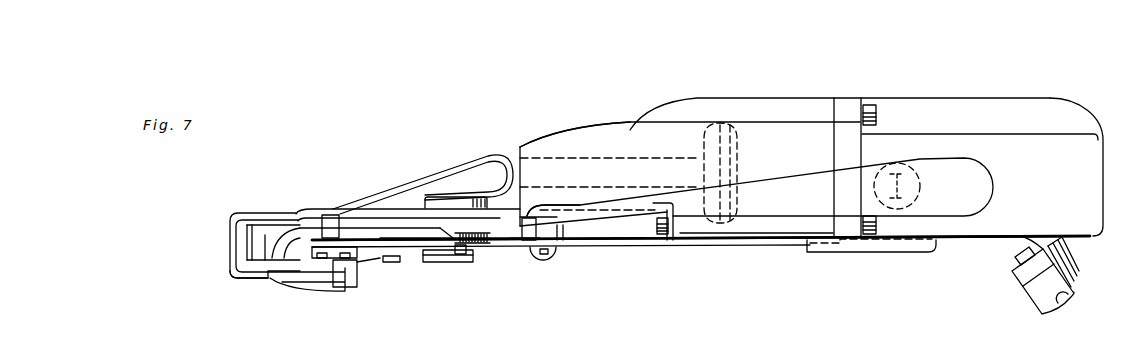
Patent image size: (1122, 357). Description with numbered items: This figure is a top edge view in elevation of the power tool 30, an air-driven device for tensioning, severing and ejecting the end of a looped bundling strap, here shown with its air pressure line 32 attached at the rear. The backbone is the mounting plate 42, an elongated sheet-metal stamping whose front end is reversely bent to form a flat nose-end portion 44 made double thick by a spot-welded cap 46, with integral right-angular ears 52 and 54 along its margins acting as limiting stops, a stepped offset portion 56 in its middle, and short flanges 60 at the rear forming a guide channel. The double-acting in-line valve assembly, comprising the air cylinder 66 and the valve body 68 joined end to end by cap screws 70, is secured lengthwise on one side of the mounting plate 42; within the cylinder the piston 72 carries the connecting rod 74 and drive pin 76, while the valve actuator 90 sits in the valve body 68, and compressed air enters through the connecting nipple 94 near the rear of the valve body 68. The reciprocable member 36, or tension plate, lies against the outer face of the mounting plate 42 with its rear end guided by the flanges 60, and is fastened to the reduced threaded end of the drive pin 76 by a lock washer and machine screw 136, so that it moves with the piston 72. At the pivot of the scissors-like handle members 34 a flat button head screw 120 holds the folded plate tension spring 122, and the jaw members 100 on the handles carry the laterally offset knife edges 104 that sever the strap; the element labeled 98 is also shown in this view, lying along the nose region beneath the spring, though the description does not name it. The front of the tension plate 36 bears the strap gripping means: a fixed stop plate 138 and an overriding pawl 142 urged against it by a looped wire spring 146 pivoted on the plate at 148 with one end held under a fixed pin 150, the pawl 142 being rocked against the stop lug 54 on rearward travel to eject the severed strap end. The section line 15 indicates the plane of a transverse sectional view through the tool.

The section line 15- 15 is at (348, 332).
The power tool 30 is at (662, 82).
The air pressure line 32 is at (1047, 294).
The handle members 34 is at (984, 189).
The reciprocable member 36 is at (747, 247).
The mounting plate 42 is at (283, 224).
The nose-end portion 44 is at (242, 247).
The cap 46 is at (233, 272).
The ear 52 is at (324, 220).
The ear 54 is at (459, 262).
The offset portion 56 is at (532, 204).
The flange 60 is at (890, 252).
The air cylinder 66 is at (703, 100).
The valve body 68 is at (1045, 100).
The cap screws 70 is at (878, 110).
The piston 72 is at (738, 149).
The connecting rod 74 is at (594, 158).
The drive pin 76 is at (532, 228).
The valve actuator 90 is at (893, 163).
The connecting nipple 94 is at (1017, 258).
The rail 98 is at (365, 222).
The jaw member 100 is at (286, 241).
The knife edge 104 is at (243, 230).
The button head screw 120 is at (467, 193).
The tension spring 122 is at (423, 183).
The lock washer and machine screw 136 is at (548, 258).
The stop plate 138 is at (358, 274).
The overriding pawl 142 is at (297, 287).
The looped wire spring 146 is at (372, 258).
The pivot of wire spring 148 is at (390, 263).
The fixed pin 150 is at (461, 254).